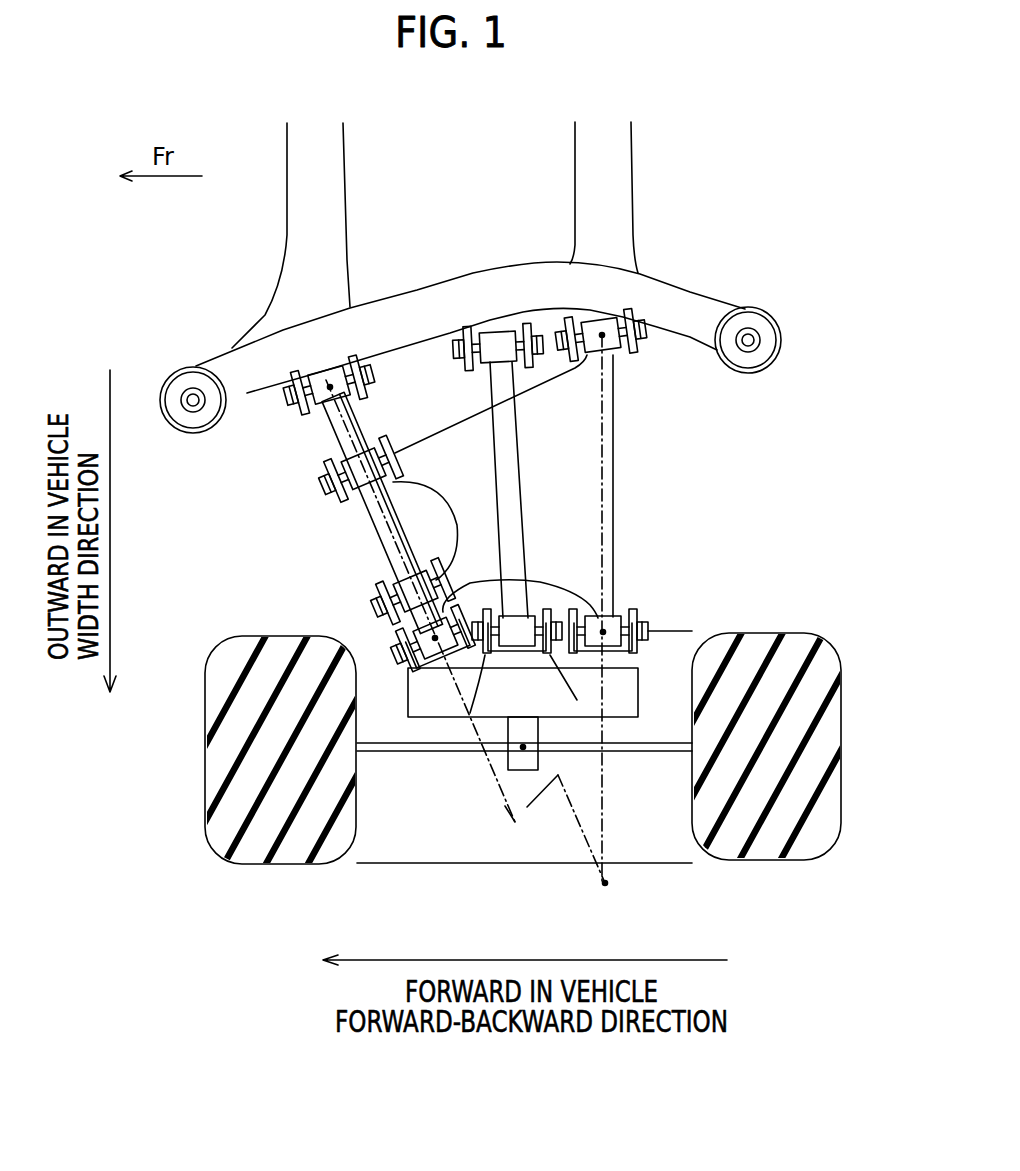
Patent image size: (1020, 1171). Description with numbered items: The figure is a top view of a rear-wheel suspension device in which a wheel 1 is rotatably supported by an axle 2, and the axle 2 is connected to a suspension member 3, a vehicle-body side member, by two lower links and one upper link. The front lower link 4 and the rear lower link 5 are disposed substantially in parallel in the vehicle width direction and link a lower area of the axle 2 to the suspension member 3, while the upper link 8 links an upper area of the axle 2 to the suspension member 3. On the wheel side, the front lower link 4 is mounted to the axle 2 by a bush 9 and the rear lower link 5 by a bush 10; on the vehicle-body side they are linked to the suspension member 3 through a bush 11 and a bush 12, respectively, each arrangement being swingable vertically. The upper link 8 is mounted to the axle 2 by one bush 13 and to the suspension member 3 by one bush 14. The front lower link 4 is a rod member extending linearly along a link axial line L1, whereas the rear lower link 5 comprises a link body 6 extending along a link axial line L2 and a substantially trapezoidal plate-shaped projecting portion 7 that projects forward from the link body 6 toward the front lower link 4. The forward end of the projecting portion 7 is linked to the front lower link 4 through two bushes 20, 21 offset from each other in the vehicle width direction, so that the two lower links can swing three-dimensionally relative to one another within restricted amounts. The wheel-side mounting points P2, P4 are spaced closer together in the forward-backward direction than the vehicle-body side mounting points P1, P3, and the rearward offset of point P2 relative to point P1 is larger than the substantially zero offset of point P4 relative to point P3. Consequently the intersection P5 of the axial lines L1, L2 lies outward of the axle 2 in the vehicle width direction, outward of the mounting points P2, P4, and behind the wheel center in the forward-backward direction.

The wheel 1 is at (813, 785).
The axle 2 is at (430, 702).
The suspension member 3 is at (381, 312).
The front lower link 4 is at (368, 512).
The rear lower link 5 is at (641, 486).
The link body 6 is at (608, 463).
The projecting portion 7 is at (570, 430).
The upper link 8 is at (507, 468).
The bush 9 is at (417, 633).
The bush 10 is at (620, 617).
The bush 11 is at (322, 402).
The bush 12 is at (588, 322).
The bush 13 is at (507, 652).
The bush 14 is at (498, 340).
The bush 20 is at (385, 578).
The bush 21 is at (342, 468).
The vehicle-body side mounting point P1 is at (332, 389).
The wheel-side mounting point P2 is at (413, 660).
The vehicle-body side mounting point P3 is at (604, 337).
The wheel-side mounting point P4 is at (605, 634).
The intersection P5 is at (622, 885).
The link axial line L1 is at (378, 537).
The link axial line L2 is at (603, 510).